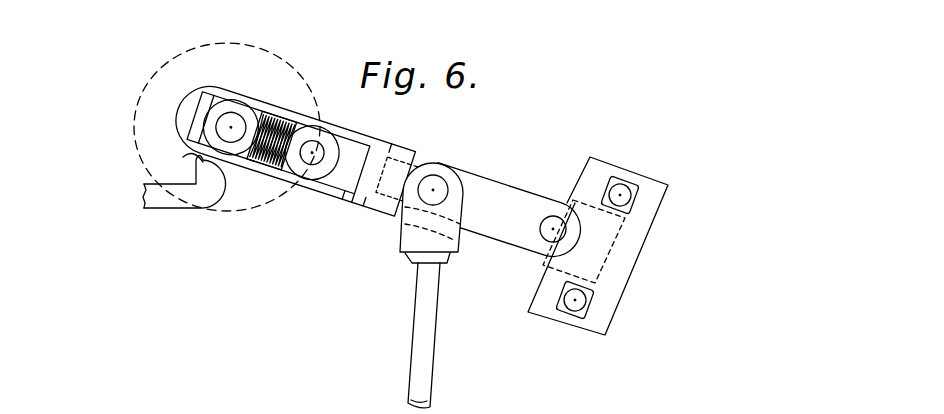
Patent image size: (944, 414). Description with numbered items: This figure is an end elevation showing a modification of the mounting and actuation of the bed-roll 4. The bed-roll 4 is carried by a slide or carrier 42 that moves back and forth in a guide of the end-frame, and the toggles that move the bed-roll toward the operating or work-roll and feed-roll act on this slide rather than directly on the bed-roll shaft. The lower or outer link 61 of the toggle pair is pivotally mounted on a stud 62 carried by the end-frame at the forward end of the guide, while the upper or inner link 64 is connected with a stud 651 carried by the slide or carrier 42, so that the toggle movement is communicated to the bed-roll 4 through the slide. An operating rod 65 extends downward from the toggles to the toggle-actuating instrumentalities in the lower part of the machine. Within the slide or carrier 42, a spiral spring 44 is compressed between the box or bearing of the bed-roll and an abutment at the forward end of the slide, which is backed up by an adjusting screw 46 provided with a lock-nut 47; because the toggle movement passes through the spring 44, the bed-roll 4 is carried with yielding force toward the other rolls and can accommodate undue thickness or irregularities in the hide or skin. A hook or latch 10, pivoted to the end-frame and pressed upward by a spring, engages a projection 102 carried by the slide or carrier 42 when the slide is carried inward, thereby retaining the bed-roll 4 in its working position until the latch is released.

The bed-roll 4 is at (156, 77).
The hook or latch 10 is at (190, 208).
The projection 102 is at (185, 162).
The slide or carrier 42 is at (358, 128).
The spiral spring 44 is at (265, 160).
The adjusting screw 46 is at (400, 172).
The lock-nut 47 is at (393, 158).
The lower or outer link 61 is at (490, 205).
The stud 62 is at (551, 232).
The upper or inner link 64 is at (311, 162).
The operating rod 65 is at (412, 357).
The stud 651 is at (347, 174).